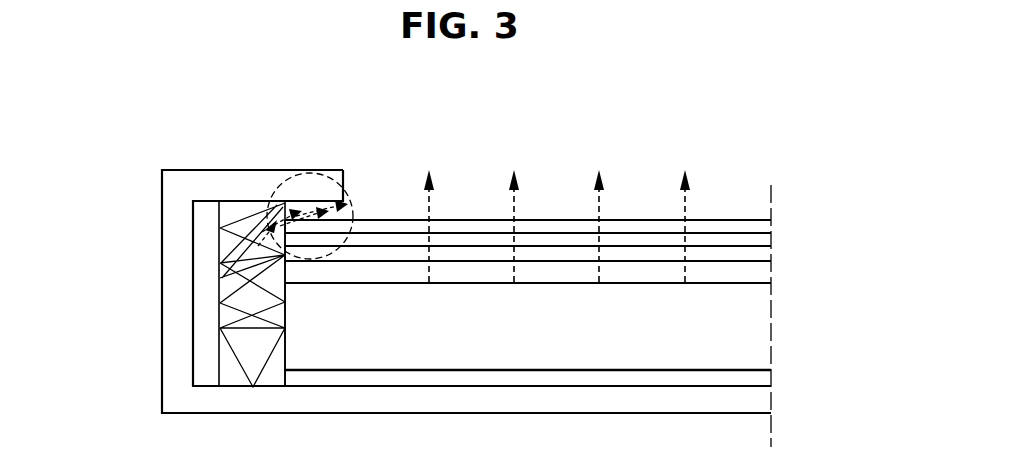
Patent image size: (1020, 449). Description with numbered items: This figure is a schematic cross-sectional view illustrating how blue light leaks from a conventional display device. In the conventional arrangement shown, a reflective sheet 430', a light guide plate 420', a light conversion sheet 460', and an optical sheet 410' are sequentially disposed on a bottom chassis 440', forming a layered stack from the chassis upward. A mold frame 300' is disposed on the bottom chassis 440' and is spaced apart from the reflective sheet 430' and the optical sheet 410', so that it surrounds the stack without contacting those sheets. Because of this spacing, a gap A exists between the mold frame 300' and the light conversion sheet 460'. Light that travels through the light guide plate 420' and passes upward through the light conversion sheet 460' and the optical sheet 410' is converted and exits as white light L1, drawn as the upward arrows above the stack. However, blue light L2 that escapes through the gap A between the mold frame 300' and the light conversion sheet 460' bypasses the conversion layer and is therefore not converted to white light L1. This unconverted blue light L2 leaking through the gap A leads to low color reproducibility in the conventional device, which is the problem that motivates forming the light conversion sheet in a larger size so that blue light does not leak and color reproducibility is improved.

The mold frame 300' is at (409, 291).
The gap A is at (282, 204).
The white light L1 is at (687, 195).
The blue light L2 is at (331, 192).
The optical sheet 410' is at (568, 303).
The light conversion sheet 460' is at (575, 273).
The light guide plate 420' is at (575, 326).
The reflective sheet 430' is at (575, 380).
The bottom chassis 440' is at (575, 406).